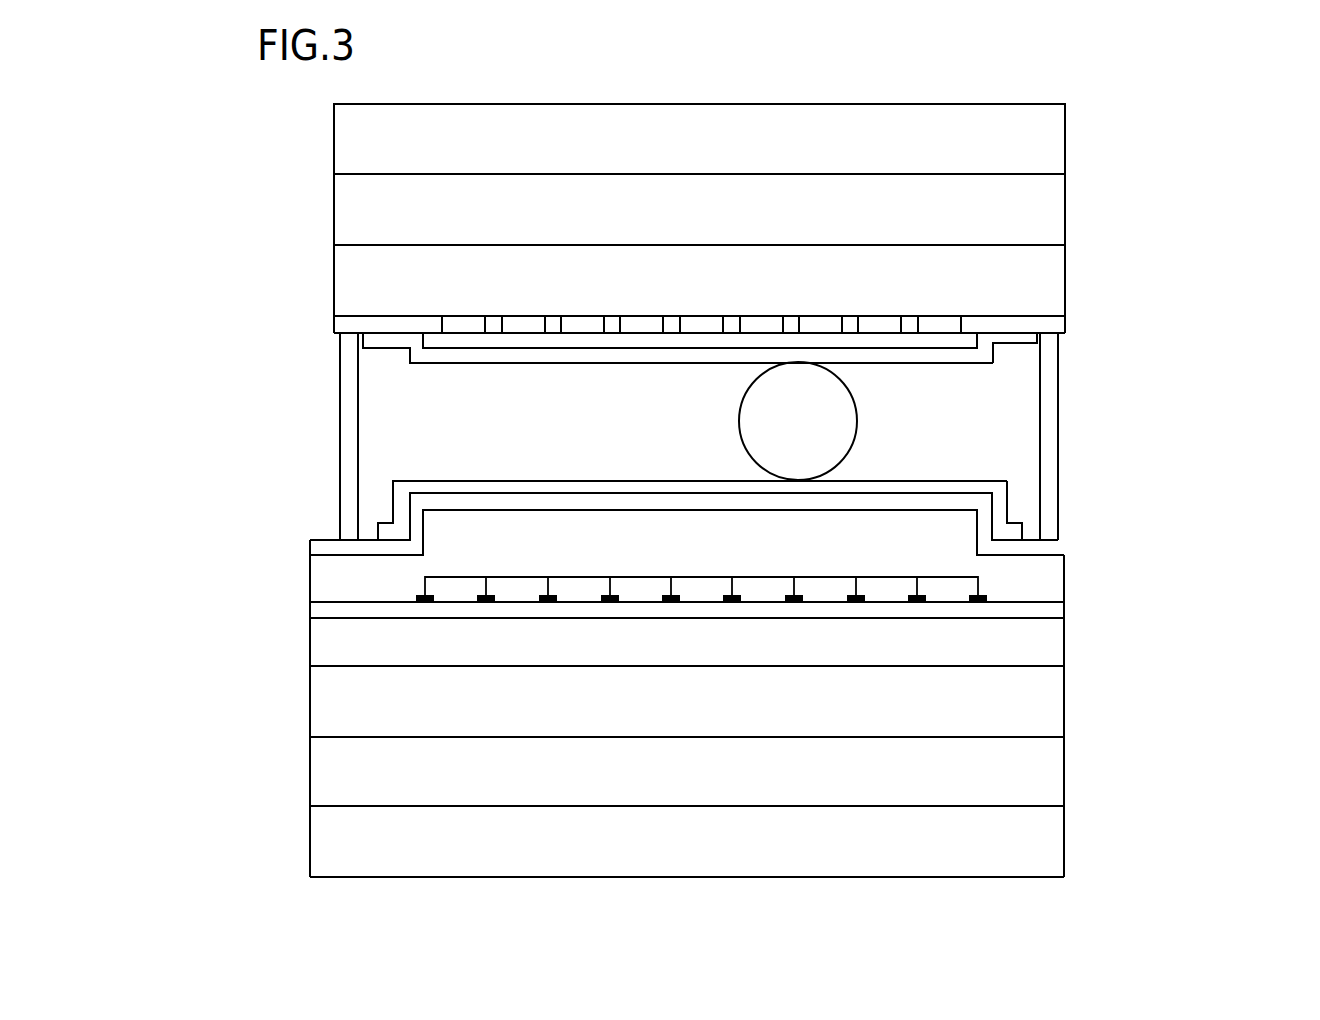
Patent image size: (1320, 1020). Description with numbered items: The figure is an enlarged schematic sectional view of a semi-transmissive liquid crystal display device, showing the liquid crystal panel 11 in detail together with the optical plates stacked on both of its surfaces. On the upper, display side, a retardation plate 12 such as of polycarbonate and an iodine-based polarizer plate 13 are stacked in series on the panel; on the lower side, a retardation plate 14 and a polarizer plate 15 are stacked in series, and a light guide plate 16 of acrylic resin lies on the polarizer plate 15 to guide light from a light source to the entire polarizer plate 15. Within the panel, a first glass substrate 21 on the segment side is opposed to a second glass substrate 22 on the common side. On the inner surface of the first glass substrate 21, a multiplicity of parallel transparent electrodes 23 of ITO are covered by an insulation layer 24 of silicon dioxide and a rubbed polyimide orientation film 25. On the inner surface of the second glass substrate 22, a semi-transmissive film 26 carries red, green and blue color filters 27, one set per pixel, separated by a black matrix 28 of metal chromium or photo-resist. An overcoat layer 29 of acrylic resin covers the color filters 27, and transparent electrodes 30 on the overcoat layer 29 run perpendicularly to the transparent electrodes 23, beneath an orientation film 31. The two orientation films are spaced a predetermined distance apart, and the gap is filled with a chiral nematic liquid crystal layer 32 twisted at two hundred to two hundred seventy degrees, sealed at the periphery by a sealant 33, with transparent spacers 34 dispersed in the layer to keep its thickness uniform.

The liquid crystal panel 11 is at (280, 247).
The retardation plate 12 is at (1038, 210).
The polarizer plate 13 is at (1038, 150).
The retardation plate 14 is at (1047, 702).
The polarizer plate 15 is at (1047, 772).
The light guide plate 16 is at (1047, 840).
The first glass substrate 21 is at (1038, 278).
The second glass substrate 22 is at (1047, 657).
The transparent electrodes 23 is at (940, 318).
The insulation layer 24 is at (1060, 323).
The orientation film 25 is at (1007, 340).
The semi-transmissive film 26 is at (1047, 607).
The color filters 27 is at (835, 590).
The black matrix 28 is at (915, 592).
The overcoat layer 29 is at (1047, 570).
The transparent electrodes 30 is at (1060, 540).
The orientation film 31 is at (997, 485).
The liquid crystal layer 32 is at (1018, 417).
The sealant 33 is at (1048, 447).
The transparent spacers 34 is at (843, 425).